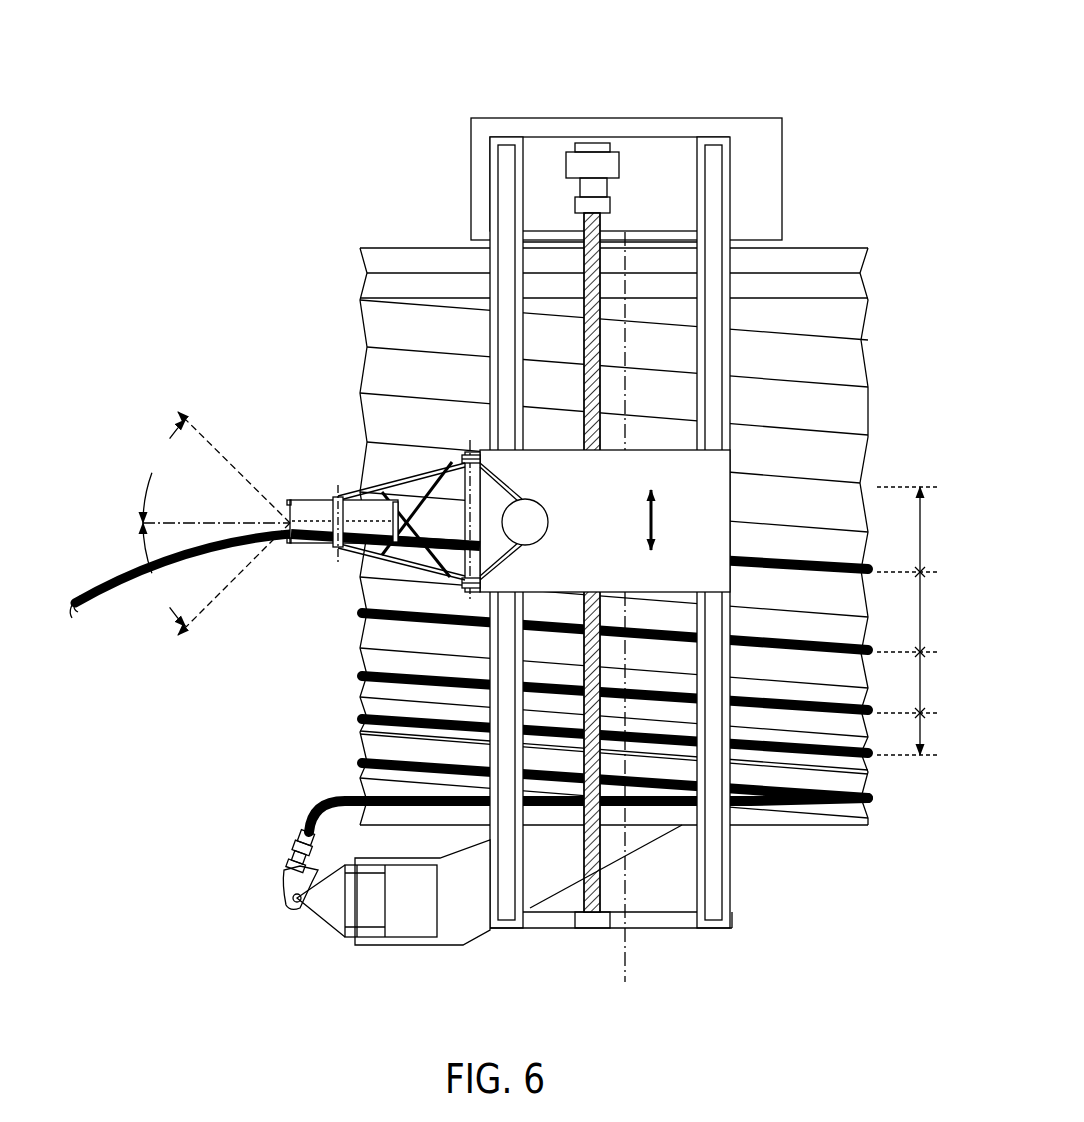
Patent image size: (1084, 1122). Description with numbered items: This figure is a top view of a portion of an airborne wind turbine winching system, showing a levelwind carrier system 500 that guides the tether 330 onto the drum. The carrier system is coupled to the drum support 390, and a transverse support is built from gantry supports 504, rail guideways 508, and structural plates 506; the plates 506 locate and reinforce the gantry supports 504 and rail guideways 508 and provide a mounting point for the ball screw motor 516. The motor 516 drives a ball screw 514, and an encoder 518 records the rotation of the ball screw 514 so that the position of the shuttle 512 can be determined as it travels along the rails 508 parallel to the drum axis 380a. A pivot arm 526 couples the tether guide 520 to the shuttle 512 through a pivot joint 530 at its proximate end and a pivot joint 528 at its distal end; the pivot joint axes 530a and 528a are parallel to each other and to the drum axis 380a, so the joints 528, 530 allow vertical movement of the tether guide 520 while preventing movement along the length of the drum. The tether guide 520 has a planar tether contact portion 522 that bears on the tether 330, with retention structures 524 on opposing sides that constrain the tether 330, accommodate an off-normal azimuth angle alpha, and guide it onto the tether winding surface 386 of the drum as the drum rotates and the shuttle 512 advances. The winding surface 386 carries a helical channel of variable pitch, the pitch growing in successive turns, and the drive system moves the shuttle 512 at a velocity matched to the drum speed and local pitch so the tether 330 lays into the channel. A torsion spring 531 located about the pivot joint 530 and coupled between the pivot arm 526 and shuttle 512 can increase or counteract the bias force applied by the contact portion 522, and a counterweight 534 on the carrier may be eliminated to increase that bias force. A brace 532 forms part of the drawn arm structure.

The levelwind carrier system 500 is at (503, 513).
The gantry supports 504 is at (493, 143).
The structural plates 506 is at (653, 153).
The rail guideways 508 is at (510, 185).
The shuttle 512 is at (698, 533).
The ball screw 514 is at (603, 221).
The ball screw motor 516 is at (568, 157).
The encoder 518 is at (600, 148).
The tether guide 520 is at (307, 490).
The planar tether contact portion 522 is at (300, 530).
The retention structures 524 is at (290, 500).
The pivot arm 526 is at (397, 567).
The pivot joint 528 is at (338, 492).
The pivot joint axis 528a is at (357, 547).
The pivot joint 530 is at (460, 452).
The pivot joint axis 530a is at (470, 438).
The torsion spring 531 is at (460, 583).
The right truss arm 532 is at (502, 553).
The counterweight 534 is at (523, 523).
The tether winding surface 386 is at (858, 317).
The drum support 390 is at (765, 222).
The tether 330 is at (87, 603).
The drum axis 380a is at (625, 623).